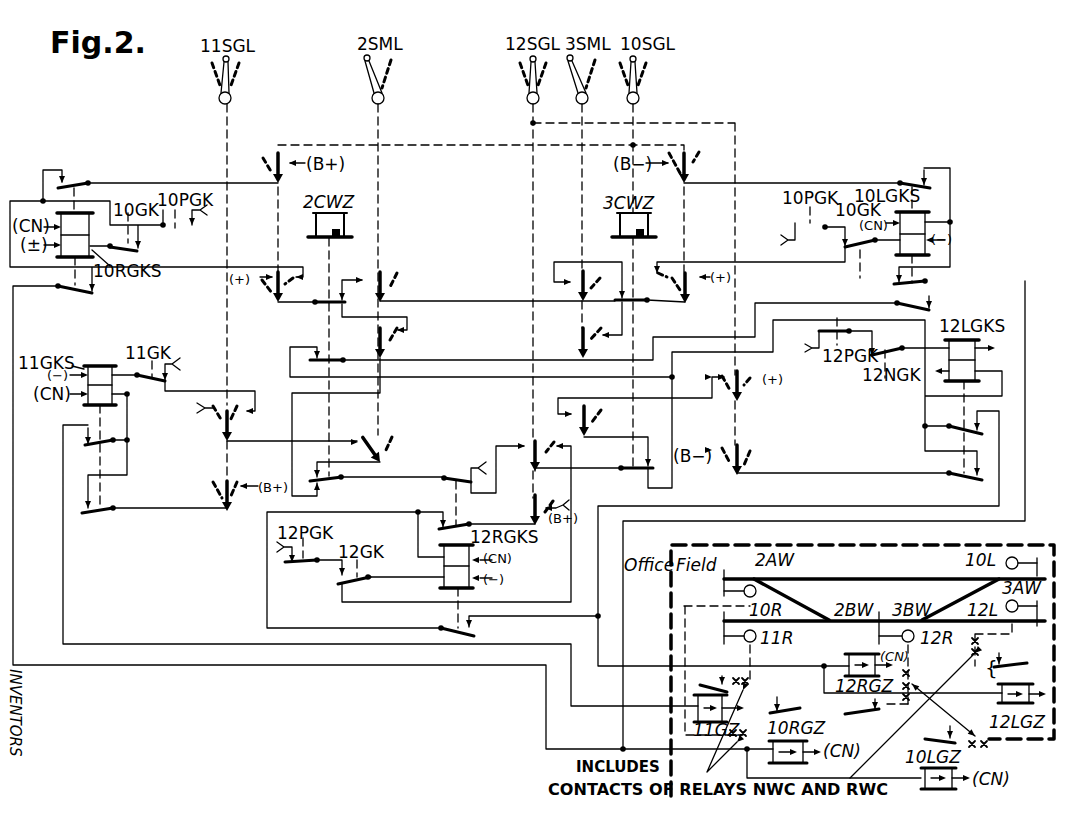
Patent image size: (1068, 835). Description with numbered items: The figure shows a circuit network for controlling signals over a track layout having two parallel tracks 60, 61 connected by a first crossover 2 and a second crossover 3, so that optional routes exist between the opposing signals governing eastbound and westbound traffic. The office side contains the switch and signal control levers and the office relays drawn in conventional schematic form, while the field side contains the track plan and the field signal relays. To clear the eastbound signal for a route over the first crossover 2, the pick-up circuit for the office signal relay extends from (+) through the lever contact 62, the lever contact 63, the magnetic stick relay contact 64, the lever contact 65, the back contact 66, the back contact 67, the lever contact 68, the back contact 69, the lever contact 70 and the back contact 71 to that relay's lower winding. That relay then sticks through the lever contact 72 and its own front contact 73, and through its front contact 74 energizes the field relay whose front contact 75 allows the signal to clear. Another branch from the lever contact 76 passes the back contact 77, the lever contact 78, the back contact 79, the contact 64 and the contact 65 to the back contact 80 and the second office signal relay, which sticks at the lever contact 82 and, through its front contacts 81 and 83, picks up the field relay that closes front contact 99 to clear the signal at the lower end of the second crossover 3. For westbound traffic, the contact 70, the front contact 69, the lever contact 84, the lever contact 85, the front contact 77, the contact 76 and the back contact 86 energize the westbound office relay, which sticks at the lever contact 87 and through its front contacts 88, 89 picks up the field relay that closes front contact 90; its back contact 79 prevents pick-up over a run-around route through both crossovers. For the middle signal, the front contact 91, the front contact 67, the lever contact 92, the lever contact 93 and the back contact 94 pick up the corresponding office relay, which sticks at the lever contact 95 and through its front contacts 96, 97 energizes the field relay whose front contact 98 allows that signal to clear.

The crossover 2 is at (791, 599).
The crossover 3 is at (960, 599).
The track 60 is at (884, 572).
The track 61 is at (884, 625).
The contact of lever 12SGL 62 is at (745, 391).
The contact of lever 3SML 63 is at (577, 430).
The contact of relay 3CWZ 64 is at (633, 481).
The contact of lever 12SGL 65 is at (526, 459).
The back contact of relay 12RGKS 66 is at (452, 467).
The contact of relay 2CWZ 67 is at (333, 489).
The contact of lever 2SML 68 is at (370, 343).
The contact of relay 2CWZ 69 is at (321, 315).
The contact of lever 10SGL 70 is at (266, 291).
The back contact of relay 10GK 71 is at (138, 248).
The contact of lever 10SGL 72 is at (288, 173).
The front contact of relay 10RGKS 73 is at (77, 173).
The front contact of relay 10RGKS 74 is at (71, 301).
The front contact of relay 10RGZ 75 is at (779, 708).
The contact of lever 10SGL 76 is at (689, 290).
The contact of relay 3CWZ 77 is at (639, 314).
The contact of lever 3SML 78 is at (575, 338).
The back contact of relay 10LGKS 79 is at (920, 297).
The back contact of relay 12GK 80 is at (361, 589).
The front contact of relay 12RGKS 81 is at (460, 514).
The contact of lever 12SGL 82 is at (522, 508).
The front contact of relay 12RGKS 83 is at (451, 620).
The contact of lever 2SML 84 is at (374, 275).
The contact of lever 3SML 85 is at (575, 287).
The back contact of relay 10GK 86 is at (862, 255).
The contact of lever 10SGL 87 is at (695, 167).
The front contact of relay 10LGKS 88 is at (909, 172).
The front contact of relay 10LGKS 89 is at (894, 284).
The front contact of relay 10LGZ 90 is at (953, 734).
The front contact of relay 2CWZ 91 is at (317, 369).
The contact of lever 2SML 92 is at (371, 440).
The contact of lever 11SGL 93 is at (214, 425).
The back contact of relay 11GK 94 is at (156, 383).
The contact of lever 11SGL 95 is at (212, 495).
The front contact of relay 11GKS 96 is at (90, 454).
The front contact of relay 11GKS 97 is at (104, 523).
The front contact of relay 11GZ 98 is at (722, 679).
The front contact of relay 12RGZ 99 is at (874, 713).